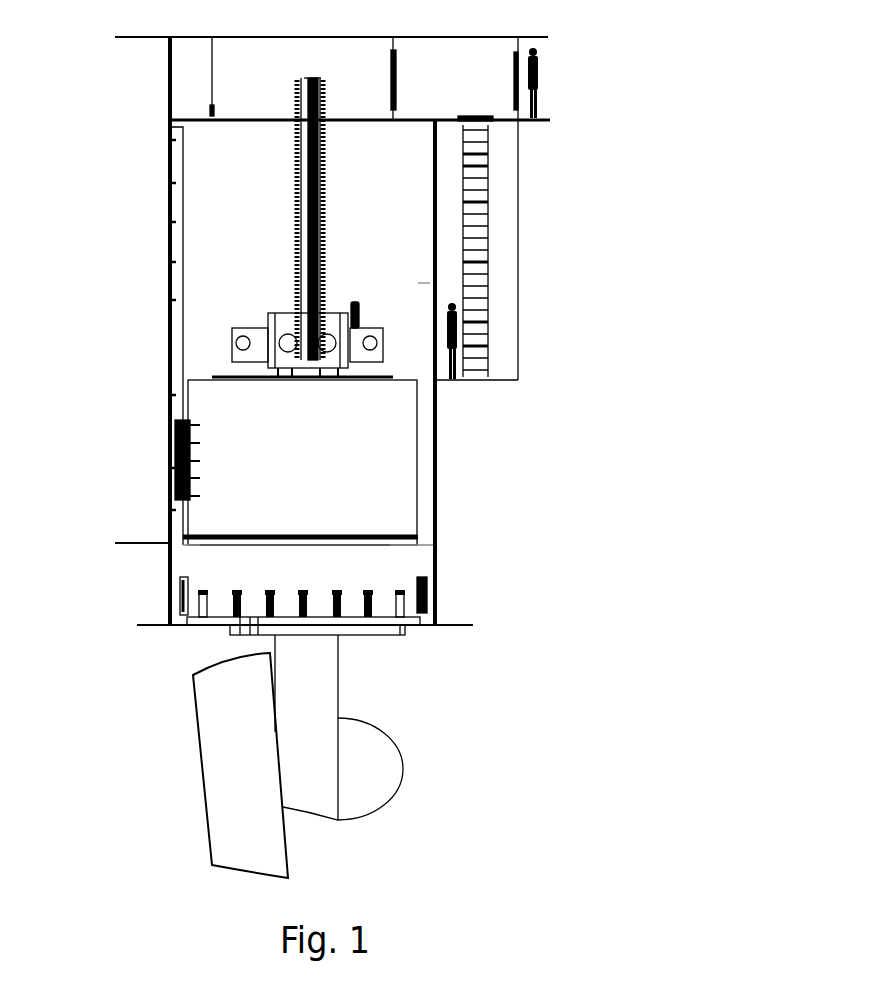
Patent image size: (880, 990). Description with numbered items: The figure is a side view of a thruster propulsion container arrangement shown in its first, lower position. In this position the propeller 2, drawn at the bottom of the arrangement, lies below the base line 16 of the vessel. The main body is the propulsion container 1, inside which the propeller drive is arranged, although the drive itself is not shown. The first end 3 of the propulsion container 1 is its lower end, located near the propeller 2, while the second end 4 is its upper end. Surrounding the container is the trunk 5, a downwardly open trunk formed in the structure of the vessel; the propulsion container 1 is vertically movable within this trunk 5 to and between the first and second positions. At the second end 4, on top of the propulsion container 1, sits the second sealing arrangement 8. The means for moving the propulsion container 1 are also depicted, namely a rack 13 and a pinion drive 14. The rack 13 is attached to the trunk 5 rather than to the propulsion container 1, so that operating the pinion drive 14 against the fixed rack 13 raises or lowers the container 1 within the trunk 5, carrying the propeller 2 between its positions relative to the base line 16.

The propulsion container 1 is at (397, 503).
The propeller 2 is at (207, 762).
The first end 3 is at (377, 611).
The second end 4 is at (195, 372).
The trunk 5 is at (437, 455).
The second sealing arrangement 8 is at (205, 113).
The rack 13 is at (297, 262).
The pinion drive 14 is at (283, 327).
The base line 16 is at (155, 625).